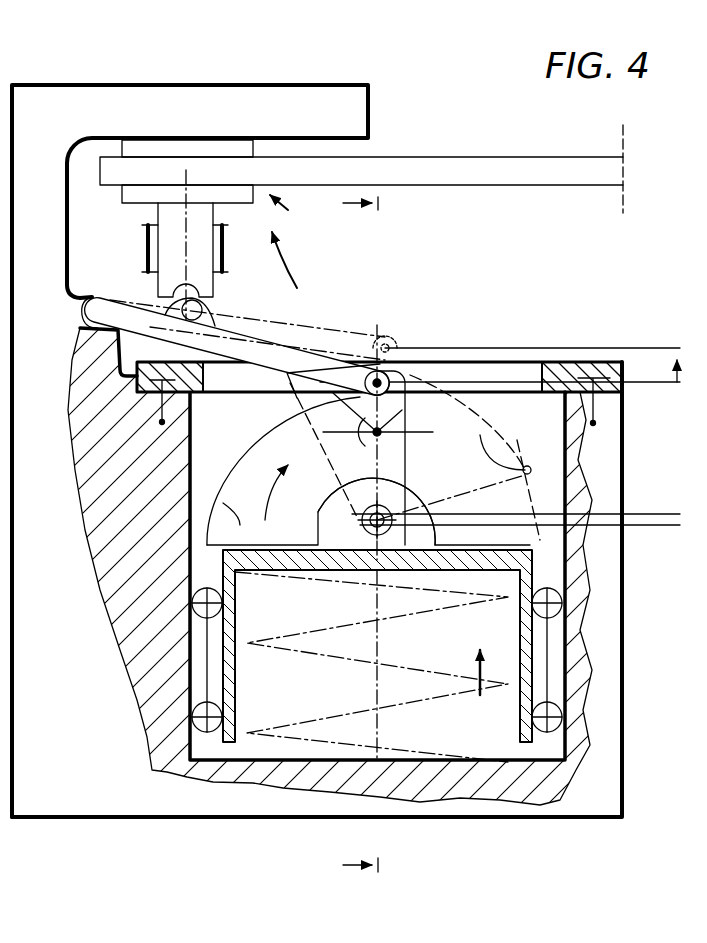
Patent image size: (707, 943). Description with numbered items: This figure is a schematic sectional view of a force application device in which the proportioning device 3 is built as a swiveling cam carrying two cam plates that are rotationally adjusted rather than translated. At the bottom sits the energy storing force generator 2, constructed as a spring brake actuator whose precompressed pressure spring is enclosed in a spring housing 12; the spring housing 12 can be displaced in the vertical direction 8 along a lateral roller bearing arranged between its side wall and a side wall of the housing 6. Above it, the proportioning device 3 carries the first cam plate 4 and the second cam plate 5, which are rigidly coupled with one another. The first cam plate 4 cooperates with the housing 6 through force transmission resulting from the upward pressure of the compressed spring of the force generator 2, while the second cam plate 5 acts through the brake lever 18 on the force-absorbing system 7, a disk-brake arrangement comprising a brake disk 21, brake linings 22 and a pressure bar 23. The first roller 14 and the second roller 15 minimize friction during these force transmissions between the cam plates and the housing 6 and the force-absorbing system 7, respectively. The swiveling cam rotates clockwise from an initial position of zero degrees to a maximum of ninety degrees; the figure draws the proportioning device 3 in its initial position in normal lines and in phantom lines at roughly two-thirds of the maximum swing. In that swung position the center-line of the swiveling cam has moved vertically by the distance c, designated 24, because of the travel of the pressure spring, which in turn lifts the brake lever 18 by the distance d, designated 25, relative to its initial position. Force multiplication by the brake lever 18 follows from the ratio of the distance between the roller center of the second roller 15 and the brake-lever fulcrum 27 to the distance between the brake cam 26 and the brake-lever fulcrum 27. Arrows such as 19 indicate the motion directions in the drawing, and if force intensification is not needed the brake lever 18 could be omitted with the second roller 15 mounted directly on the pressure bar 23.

The force generator 2 is at (706, 660).
The proportioning device 3 is at (362, 454).
The first cam plate 4 is at (318, 525).
The second cam plate 5 is at (313, 538).
The housing 6 is at (353, 450).
The force-absorbing system 7 is at (287, 212).
The vertical direction 8 is at (470, 648).
The spring housing 12 is at (530, 640).
The first roller 14 is at (398, 452).
The second roller 15 is at (392, 368).
The brake lever 18 is at (237, 347).
The direction arrow 19 is at (293, 262).
The brake disk 21 is at (488, 158).
The brake linings 22 is at (233, 195).
The pressure bar 23 is at (167, 213).
The distance c 24 is at (672, 517).
The distance d 25 is at (668, 375).
The brake cam 26 is at (217, 307).
The brake-lever fulcrum 27 is at (96, 302).
The distance c is at (697, 521).
The distance d is at (690, 369).